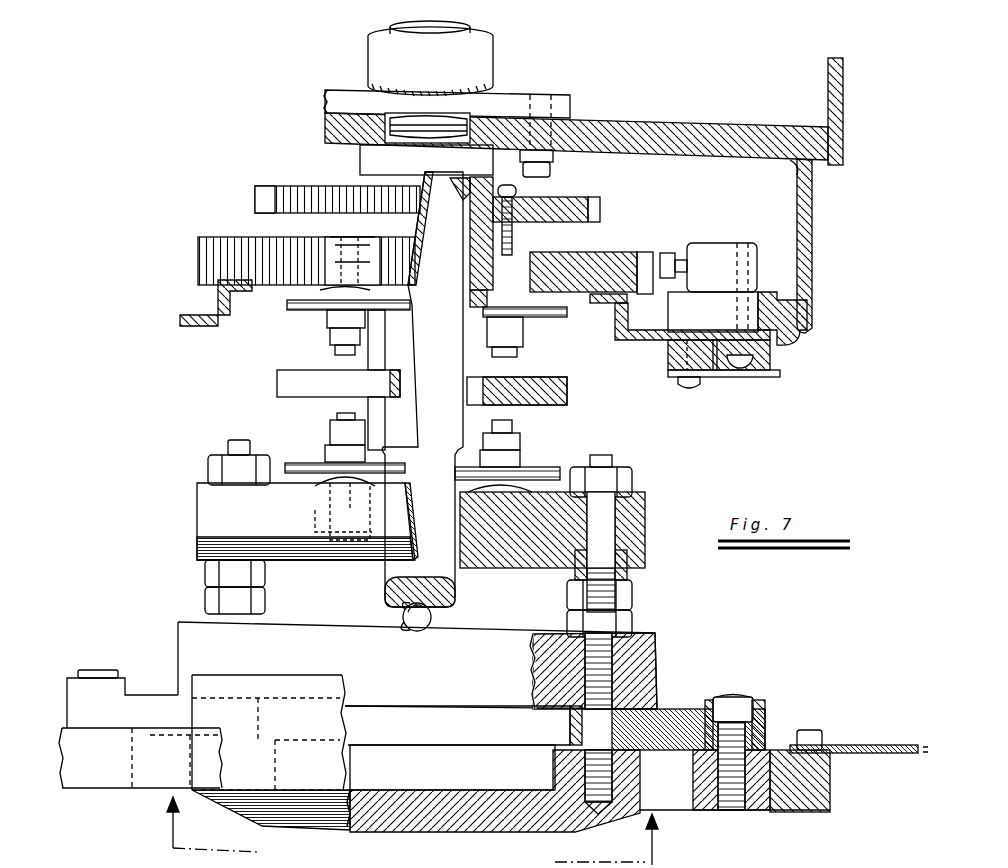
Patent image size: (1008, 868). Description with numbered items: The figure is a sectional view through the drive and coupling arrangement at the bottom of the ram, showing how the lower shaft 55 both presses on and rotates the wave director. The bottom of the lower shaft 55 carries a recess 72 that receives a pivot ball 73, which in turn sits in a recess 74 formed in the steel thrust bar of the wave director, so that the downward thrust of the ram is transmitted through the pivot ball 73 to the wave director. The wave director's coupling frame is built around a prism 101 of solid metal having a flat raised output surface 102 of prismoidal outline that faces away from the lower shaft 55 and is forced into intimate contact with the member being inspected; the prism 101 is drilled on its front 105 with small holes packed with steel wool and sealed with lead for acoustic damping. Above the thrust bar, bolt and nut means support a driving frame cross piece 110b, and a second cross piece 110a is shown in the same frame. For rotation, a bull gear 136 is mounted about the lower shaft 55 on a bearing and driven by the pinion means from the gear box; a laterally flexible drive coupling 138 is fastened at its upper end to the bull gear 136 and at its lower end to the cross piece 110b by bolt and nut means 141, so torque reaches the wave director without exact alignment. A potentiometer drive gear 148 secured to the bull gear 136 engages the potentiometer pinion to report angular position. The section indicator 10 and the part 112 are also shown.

The potentiometer drive gear 148 is at (255, 200).
The bull gear 136 is at (602, 262).
The laterally flexible drive coupling 138 is at (249, 387).
The bolt and nut means 141 is at (235, 440).
The lower shaft 55 is at (425, 530).
The driving frame cross piece 110b is at (633, 518).
The lower clamp block 110a is at (643, 672).
The recess 72 is at (404, 611).
The pivot ball 73 is at (432, 621).
The recess 74 is at (403, 623).
The front 105 is at (323, 775).
The prism 101 is at (238, 820).
The output surface 102 is at (398, 832).
The section line 10 is at (411, 831).
The plate 112 is at (891, 860).